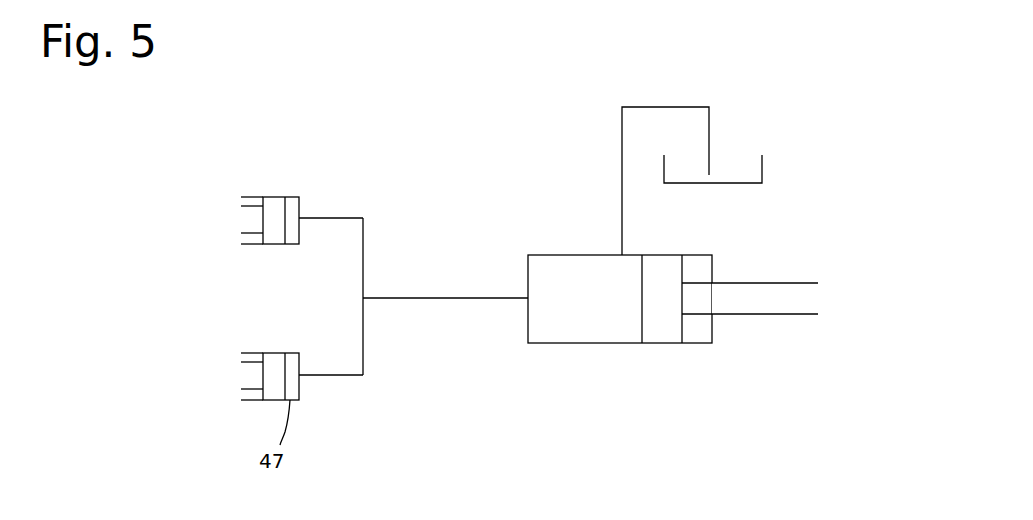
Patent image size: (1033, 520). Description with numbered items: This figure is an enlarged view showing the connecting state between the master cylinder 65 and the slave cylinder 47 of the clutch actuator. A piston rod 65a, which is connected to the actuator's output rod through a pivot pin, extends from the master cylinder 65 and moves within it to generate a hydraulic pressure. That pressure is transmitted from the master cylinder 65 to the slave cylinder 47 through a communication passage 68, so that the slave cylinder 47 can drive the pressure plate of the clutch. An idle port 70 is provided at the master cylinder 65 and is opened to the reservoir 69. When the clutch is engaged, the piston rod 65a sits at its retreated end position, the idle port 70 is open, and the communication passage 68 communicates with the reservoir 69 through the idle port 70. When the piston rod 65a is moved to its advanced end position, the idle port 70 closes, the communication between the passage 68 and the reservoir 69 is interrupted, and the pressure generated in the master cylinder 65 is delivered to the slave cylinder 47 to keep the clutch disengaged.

The slave cylinder 47 is at (290, 197).
The communication passage 68 is at (465, 298).
The master cylinder 65 is at (612, 343).
The piston rod 65a is at (750, 306).
The idle port 70 is at (620, 254).
The reservoir 69 is at (762, 170).